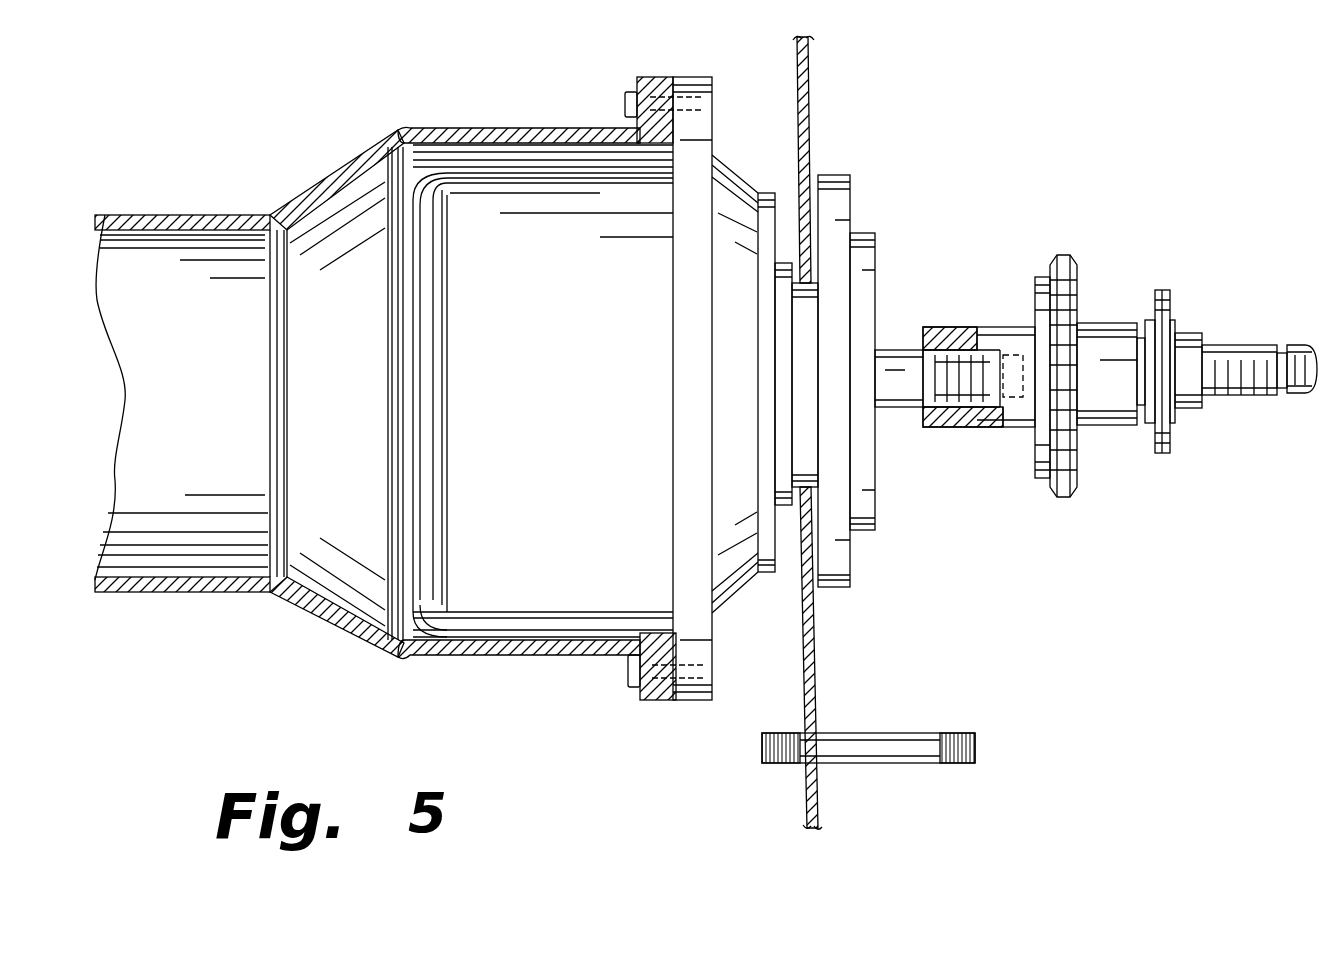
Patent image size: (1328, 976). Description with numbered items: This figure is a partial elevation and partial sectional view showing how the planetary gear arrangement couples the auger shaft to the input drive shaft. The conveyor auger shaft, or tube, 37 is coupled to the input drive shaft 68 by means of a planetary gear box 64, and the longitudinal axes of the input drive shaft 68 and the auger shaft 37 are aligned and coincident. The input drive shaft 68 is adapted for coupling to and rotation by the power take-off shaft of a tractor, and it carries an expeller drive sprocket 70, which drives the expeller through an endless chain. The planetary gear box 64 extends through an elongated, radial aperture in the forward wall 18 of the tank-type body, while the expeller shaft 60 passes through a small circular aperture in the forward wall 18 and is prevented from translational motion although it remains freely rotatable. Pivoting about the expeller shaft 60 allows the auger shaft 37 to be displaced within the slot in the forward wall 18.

The shaft 37 is at (457, 128).
The planetary gear box 64 is at (730, 160).
The forward wall 18 is at (818, 650).
The expeller shaft 60 is at (923, 763).
The expeller drive sprocket 70 is at (1062, 255).
The input drive shaft 68 is at (1240, 348).